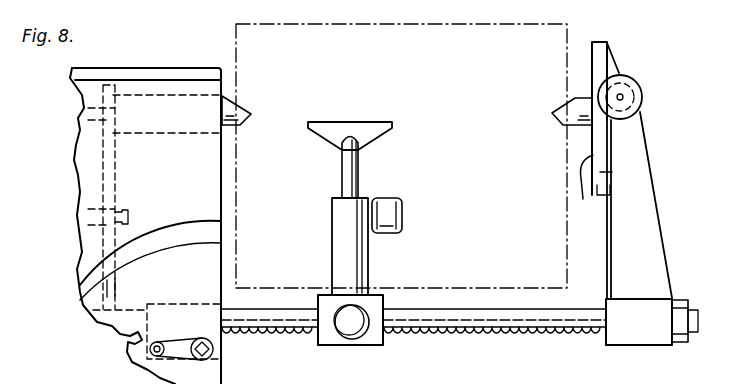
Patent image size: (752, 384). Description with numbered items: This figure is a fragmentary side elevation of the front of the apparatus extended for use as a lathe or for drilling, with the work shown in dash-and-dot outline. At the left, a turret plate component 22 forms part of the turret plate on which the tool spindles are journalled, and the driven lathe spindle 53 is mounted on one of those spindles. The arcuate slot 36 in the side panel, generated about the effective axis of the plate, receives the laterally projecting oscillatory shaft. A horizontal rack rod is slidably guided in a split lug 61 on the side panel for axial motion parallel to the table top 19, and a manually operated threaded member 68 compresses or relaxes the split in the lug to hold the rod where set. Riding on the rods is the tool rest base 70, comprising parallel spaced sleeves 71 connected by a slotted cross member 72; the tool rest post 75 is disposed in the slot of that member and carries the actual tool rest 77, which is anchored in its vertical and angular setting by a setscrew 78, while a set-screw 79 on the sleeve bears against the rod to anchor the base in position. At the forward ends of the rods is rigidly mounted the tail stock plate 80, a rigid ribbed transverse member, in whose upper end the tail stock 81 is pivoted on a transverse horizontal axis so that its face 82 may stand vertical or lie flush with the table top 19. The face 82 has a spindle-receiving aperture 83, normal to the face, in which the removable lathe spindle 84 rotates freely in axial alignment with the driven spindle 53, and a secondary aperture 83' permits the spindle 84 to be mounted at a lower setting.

The table top 19 is at (180, 70).
The turret plate component 22 is at (117, 160).
The arcuate slot 36 is at (185, 258).
The lathe spindle 53 is at (232, 103).
The split lug 61 is at (210, 310).
The threaded member 68 is at (200, 344).
The tool rest base 70 is at (322, 310).
The sleeve 71 is at (380, 312).
The slotted cross member 72 is at (372, 294).
The tool rest post 75 is at (368, 246).
The tool rest 77 is at (367, 128).
The setscrew 78 is at (396, 214).
The set-screw 79 is at (352, 335).
The tail stock plate 80 is at (648, 220).
The tail stock 81 is at (605, 53).
The face 82 is at (591, 188).
The spindle-receiving aperture 83 is at (638, 109).
The secondary aperture 83' is at (645, 175).
The removable lathe spindle 84 is at (566, 106).